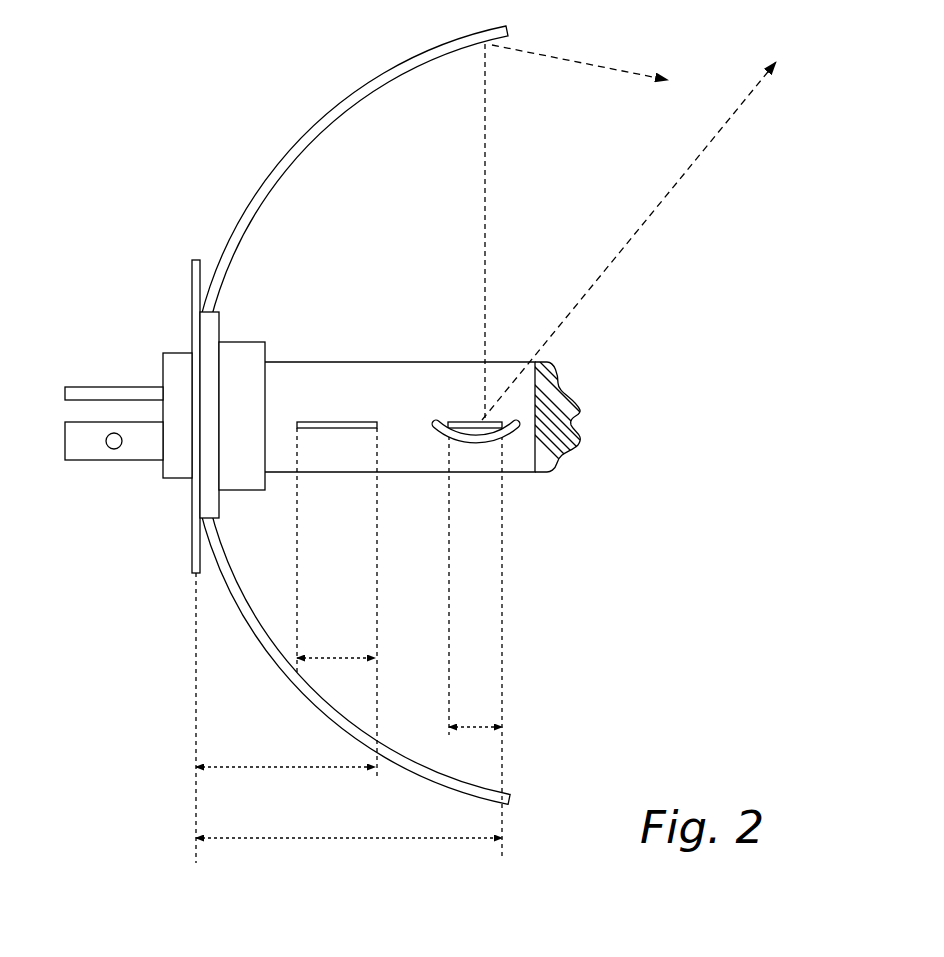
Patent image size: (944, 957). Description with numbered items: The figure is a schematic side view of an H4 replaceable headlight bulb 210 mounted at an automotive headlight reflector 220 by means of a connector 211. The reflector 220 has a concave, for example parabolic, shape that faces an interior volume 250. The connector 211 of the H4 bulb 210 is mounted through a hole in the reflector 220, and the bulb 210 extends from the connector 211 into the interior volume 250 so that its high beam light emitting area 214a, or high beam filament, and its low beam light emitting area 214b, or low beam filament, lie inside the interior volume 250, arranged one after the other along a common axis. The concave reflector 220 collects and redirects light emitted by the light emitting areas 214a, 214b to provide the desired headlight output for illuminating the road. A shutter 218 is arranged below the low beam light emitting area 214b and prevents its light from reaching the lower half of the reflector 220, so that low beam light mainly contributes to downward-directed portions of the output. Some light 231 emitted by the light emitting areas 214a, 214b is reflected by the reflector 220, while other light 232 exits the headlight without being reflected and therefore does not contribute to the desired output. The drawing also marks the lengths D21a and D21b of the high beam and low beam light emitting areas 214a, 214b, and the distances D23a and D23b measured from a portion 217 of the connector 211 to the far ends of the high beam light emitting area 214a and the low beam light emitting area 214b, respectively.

The H4 replaceable headlight bulb 210 is at (687, 396).
The connector 211 is at (254, 313).
The high beam light emitting area 214a is at (342, 420).
The low beam light emitting area 214b is at (465, 420).
The portion of the connector 217 is at (192, 547).
The shutter 218 is at (472, 443).
The automotive headlight reflector 220 is at (297, 142).
The light reflected by the reflector 231 is at (576, 225).
The light exiting without reflection 232 is at (629, 241).
The interior volume 250 is at (396, 196).
The length of the high beam light emitting area D21a is at (336, 642).
The length of the low beam light emitting area D21b is at (475, 713).
The distance to far end of high beam light emitting area D23a is at (285, 718).
The distance to far end of low beam light emitting area D23b is at (349, 859).